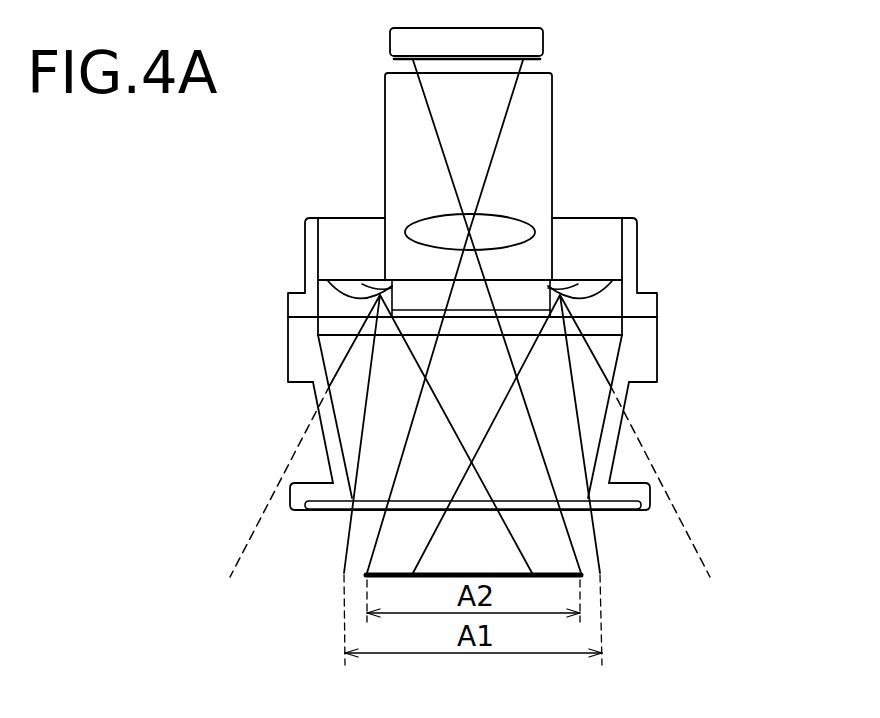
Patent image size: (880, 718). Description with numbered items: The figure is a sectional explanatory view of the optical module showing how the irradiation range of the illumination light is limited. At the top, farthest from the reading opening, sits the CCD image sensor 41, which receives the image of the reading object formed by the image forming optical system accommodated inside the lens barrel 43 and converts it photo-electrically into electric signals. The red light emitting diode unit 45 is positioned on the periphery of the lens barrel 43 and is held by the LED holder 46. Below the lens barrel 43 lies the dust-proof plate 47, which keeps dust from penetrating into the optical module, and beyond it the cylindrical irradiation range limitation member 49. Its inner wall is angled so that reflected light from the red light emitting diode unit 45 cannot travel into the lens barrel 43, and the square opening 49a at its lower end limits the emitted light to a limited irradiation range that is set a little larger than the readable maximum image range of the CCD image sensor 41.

The CCD image sensor 41 is at (532, 44).
The lens barrel 43 is at (532, 126).
The red light emitting diode unit 45 is at (335, 283).
The LED holder 46 is at (625, 250).
The dust-proof plate 47 is at (338, 328).
The irradiation range limitation member 49 is at (330, 438).
The opening 49a is at (368, 516).